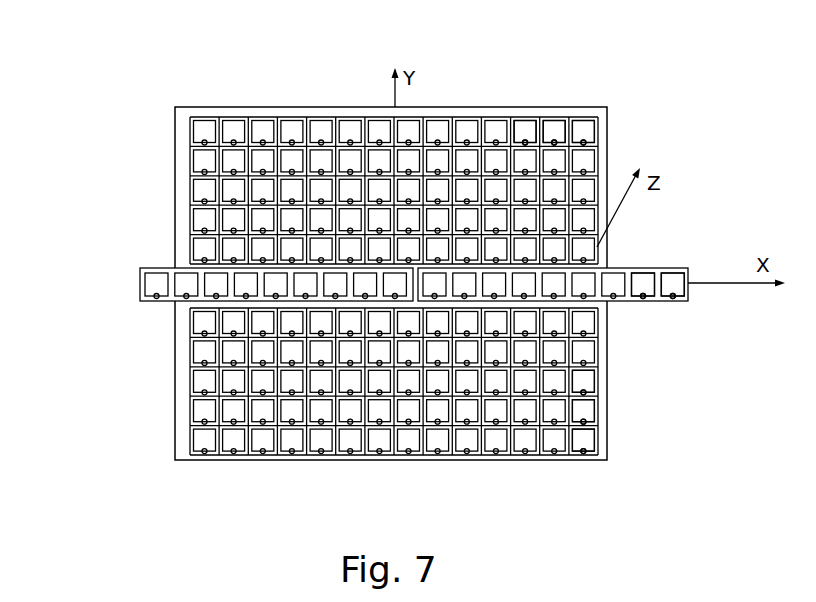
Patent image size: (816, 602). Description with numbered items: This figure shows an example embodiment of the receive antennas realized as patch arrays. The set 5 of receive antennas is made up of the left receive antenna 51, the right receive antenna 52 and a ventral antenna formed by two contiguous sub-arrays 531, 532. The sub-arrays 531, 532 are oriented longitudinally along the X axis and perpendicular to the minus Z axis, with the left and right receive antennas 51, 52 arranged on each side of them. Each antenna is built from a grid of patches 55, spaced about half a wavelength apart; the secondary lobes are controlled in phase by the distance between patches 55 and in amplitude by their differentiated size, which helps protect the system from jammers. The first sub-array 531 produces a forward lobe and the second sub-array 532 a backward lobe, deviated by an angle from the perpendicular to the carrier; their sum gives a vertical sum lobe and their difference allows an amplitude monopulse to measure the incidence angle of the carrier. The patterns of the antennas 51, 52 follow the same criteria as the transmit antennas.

The set of receive antennas 5 is at (150, 103).
The left receive antenna 51 is at (250, 112).
The right receive antenna 52 is at (183, 436).
The first sub-array of the ventral antenna 531 is at (138, 283).
The second sub-array of the ventral antenna 532 is at (650, 305).
The patch 55 is at (583, 135).